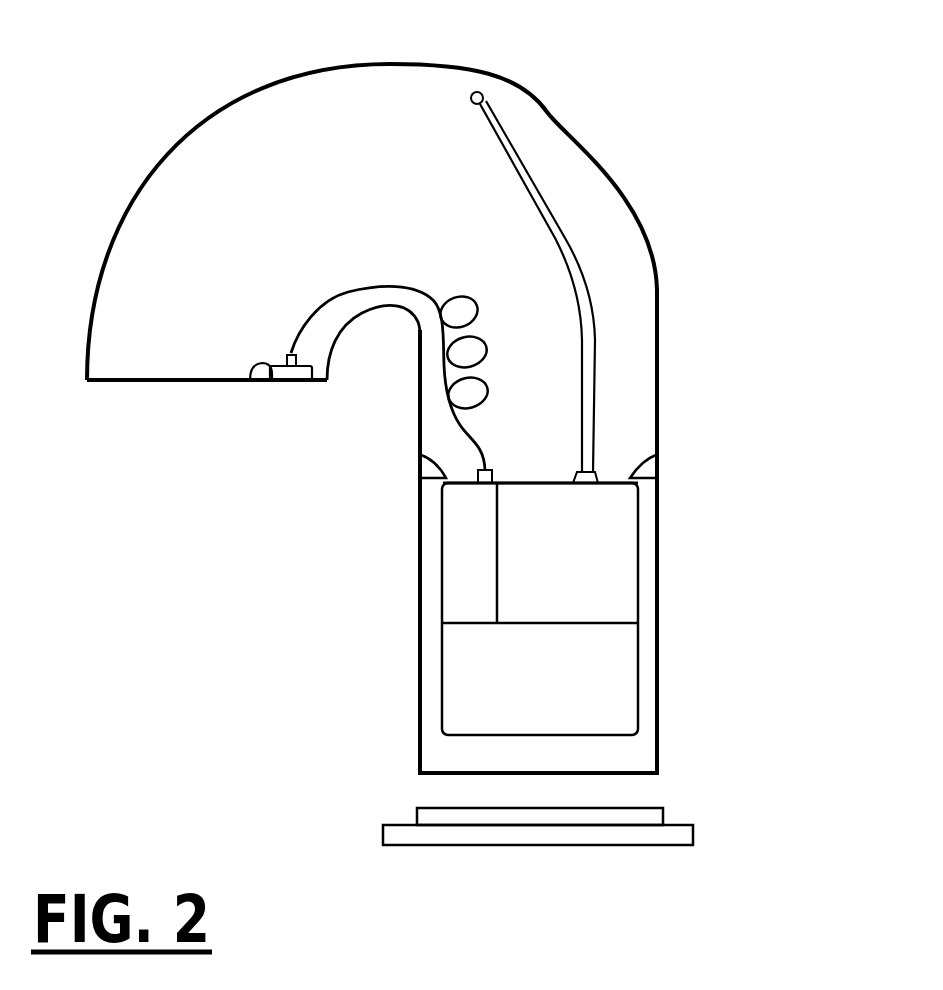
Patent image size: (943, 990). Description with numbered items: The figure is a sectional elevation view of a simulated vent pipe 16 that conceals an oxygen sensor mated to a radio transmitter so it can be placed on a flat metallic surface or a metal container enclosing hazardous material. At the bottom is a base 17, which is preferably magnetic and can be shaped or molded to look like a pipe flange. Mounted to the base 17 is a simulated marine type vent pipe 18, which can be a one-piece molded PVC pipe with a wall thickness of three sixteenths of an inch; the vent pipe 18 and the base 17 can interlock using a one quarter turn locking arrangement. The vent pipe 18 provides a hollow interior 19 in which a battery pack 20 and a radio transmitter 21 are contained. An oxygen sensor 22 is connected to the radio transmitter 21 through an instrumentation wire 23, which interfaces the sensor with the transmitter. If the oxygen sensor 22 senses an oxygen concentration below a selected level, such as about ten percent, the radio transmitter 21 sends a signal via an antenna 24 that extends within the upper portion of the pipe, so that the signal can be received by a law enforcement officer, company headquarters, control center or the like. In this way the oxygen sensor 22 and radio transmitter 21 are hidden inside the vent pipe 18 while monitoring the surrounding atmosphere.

The simulated vent pipe 16 is at (776, 92).
The base 17 is at (695, 832).
The simulated marine type vent pipe 18 is at (661, 414).
The interior 19 is at (335, 146).
The battery pack 20 is at (450, 710).
The radio transmitter 21 is at (585, 588).
The oxygen sensor 22 is at (252, 376).
The instrumentation wire 23 is at (385, 287).
The antenna 24 is at (527, 158).